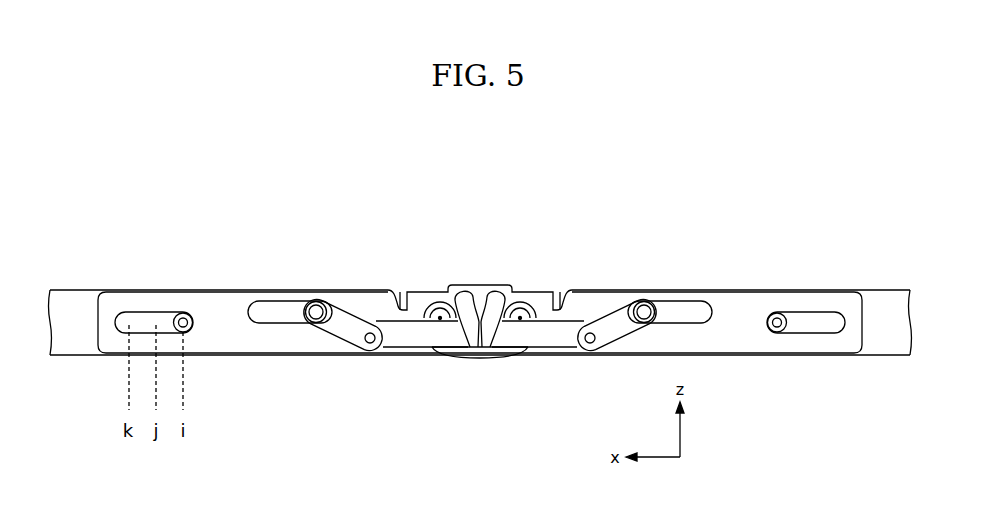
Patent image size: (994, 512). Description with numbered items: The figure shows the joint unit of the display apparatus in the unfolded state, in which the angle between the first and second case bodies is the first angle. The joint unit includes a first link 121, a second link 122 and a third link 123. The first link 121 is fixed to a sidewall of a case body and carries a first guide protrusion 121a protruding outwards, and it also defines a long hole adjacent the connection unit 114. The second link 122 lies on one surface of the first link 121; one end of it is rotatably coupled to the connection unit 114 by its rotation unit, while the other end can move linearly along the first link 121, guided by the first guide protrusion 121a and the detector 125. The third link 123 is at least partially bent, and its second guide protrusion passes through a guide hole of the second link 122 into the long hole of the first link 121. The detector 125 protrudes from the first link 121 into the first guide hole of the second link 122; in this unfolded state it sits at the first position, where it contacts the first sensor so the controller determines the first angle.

The connection unit 114 is at (480, 285).
The first link 121 is at (76, 305).
The first guide protrusion 121a is at (316, 301).
The second link 122 is at (232, 355).
The third link 123 is at (407, 348).
The detector 125 is at (183, 313).